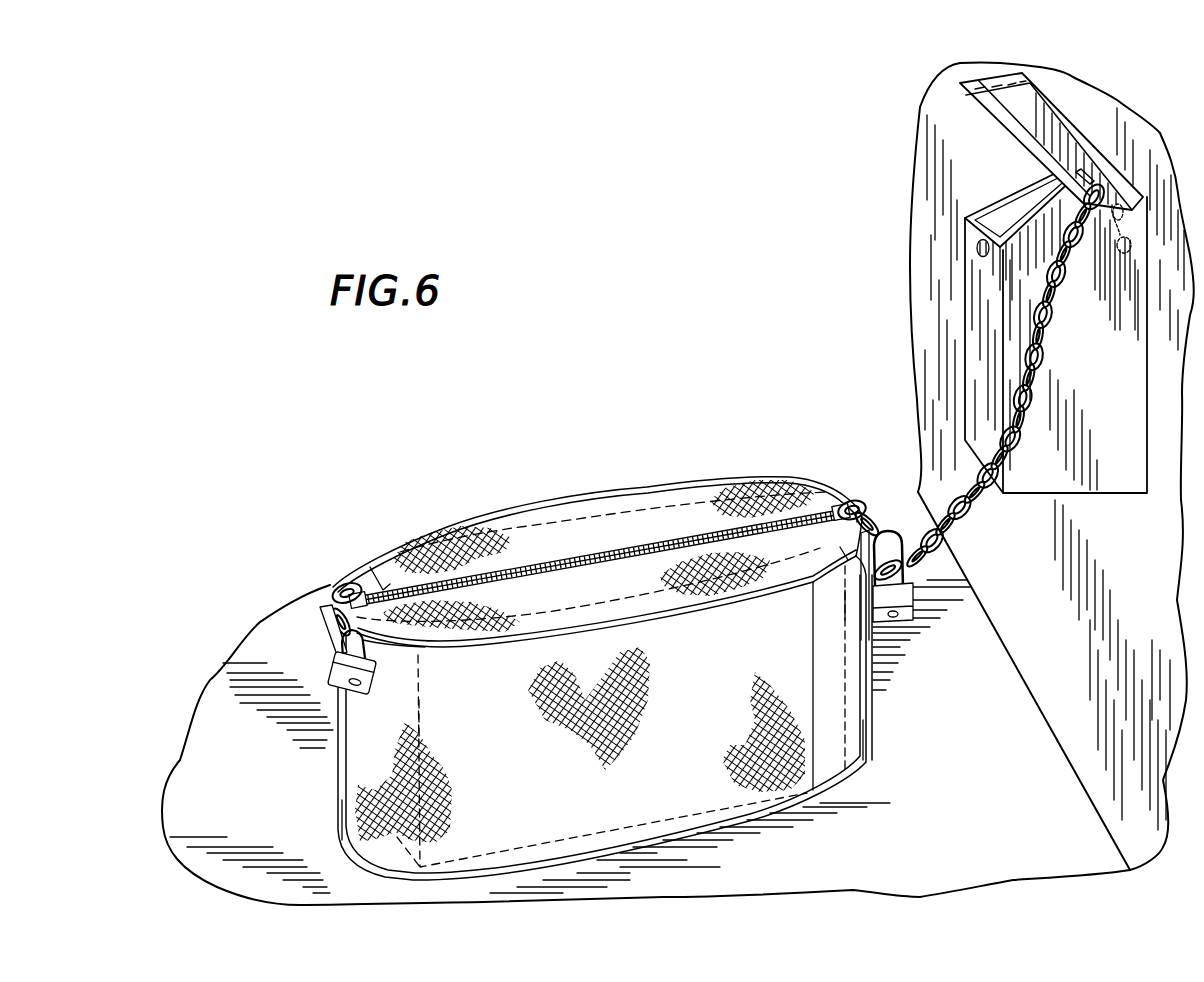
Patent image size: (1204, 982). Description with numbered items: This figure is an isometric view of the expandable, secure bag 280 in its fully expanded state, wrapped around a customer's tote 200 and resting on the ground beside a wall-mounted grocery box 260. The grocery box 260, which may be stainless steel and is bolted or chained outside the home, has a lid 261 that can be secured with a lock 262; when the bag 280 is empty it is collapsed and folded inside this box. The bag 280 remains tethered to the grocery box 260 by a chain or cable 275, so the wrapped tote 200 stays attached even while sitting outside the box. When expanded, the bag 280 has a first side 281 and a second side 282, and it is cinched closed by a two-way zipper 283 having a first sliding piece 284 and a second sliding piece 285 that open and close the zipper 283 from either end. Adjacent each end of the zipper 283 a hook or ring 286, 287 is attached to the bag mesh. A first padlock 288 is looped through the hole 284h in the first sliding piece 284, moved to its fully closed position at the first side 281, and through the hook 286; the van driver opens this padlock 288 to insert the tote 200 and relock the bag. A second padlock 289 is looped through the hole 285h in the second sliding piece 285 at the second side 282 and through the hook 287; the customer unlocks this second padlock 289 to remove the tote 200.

The tote 200 is at (418, 711).
The grocery box 260 is at (977, 333).
The lid 261 is at (1047, 134).
The lock 262 is at (977, 250).
The chain or cable 275 is at (988, 494).
The expandable, secure bag 280 is at (608, 669).
The first side 281 is at (873, 730).
The second side 282 is at (337, 813).
The two-way zipper 283 is at (570, 560).
The first sliding piece 284 is at (863, 497).
The hole in first sliding piece 284h is at (887, 502).
The second sliding piece 285 is at (325, 590).
The hole in second sliding piece 285h is at (320, 627).
The hook or ring 286 is at (845, 605).
The hook or ring 287 is at (373, 650).
The first padlock 288 is at (912, 608).
The second padlock 289 is at (327, 646).